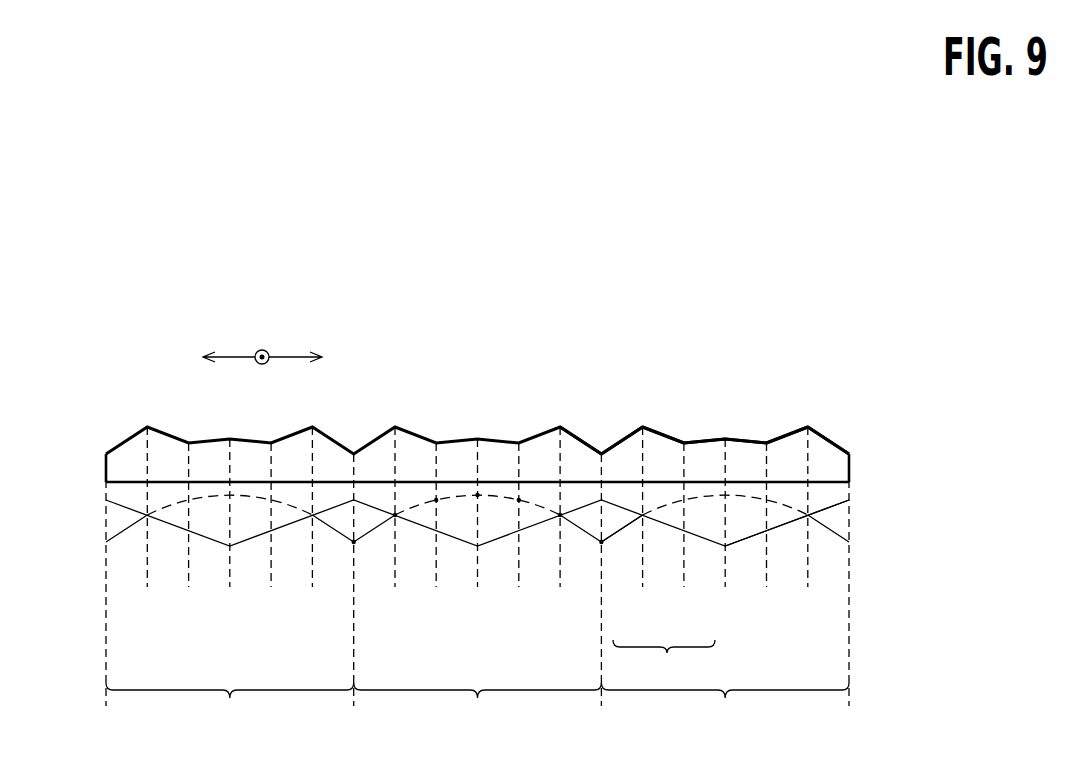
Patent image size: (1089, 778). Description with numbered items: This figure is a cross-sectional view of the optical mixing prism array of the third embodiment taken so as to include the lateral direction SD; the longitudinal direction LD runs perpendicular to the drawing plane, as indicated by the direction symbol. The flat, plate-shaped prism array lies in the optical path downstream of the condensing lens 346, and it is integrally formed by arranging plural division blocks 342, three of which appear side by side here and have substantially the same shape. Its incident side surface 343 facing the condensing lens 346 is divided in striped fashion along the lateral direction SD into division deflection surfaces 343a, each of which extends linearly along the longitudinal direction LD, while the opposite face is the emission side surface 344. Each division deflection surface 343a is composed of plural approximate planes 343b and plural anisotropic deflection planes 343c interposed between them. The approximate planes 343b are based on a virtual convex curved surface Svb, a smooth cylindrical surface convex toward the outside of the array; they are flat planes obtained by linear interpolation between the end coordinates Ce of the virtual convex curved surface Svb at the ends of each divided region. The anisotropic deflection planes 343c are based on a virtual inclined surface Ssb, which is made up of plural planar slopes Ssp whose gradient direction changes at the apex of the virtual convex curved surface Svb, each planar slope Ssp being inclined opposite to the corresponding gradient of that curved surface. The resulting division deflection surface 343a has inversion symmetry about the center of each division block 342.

The condensing lens 346 is at (112, 378).
The incident side surface 343 is at (126, 438).
The emission side surface 344 is at (130, 484).
The division block 342 is at (477, 711).
The division deflection surface 343a is at (617, 442).
The approximate plane 343b is at (753, 442).
The anisotropic deflection plane 343c is at (796, 428).
The longitudinal direction LD is at (259, 350).
The lateral direction SD is at (292, 356).
The end coordinates Ce is at (601, 542).
The planar slope Ssp is at (740, 540).
The virtual inclined surface Ssb is at (757, 498).
The virtual convex curved surface Svb is at (835, 530).